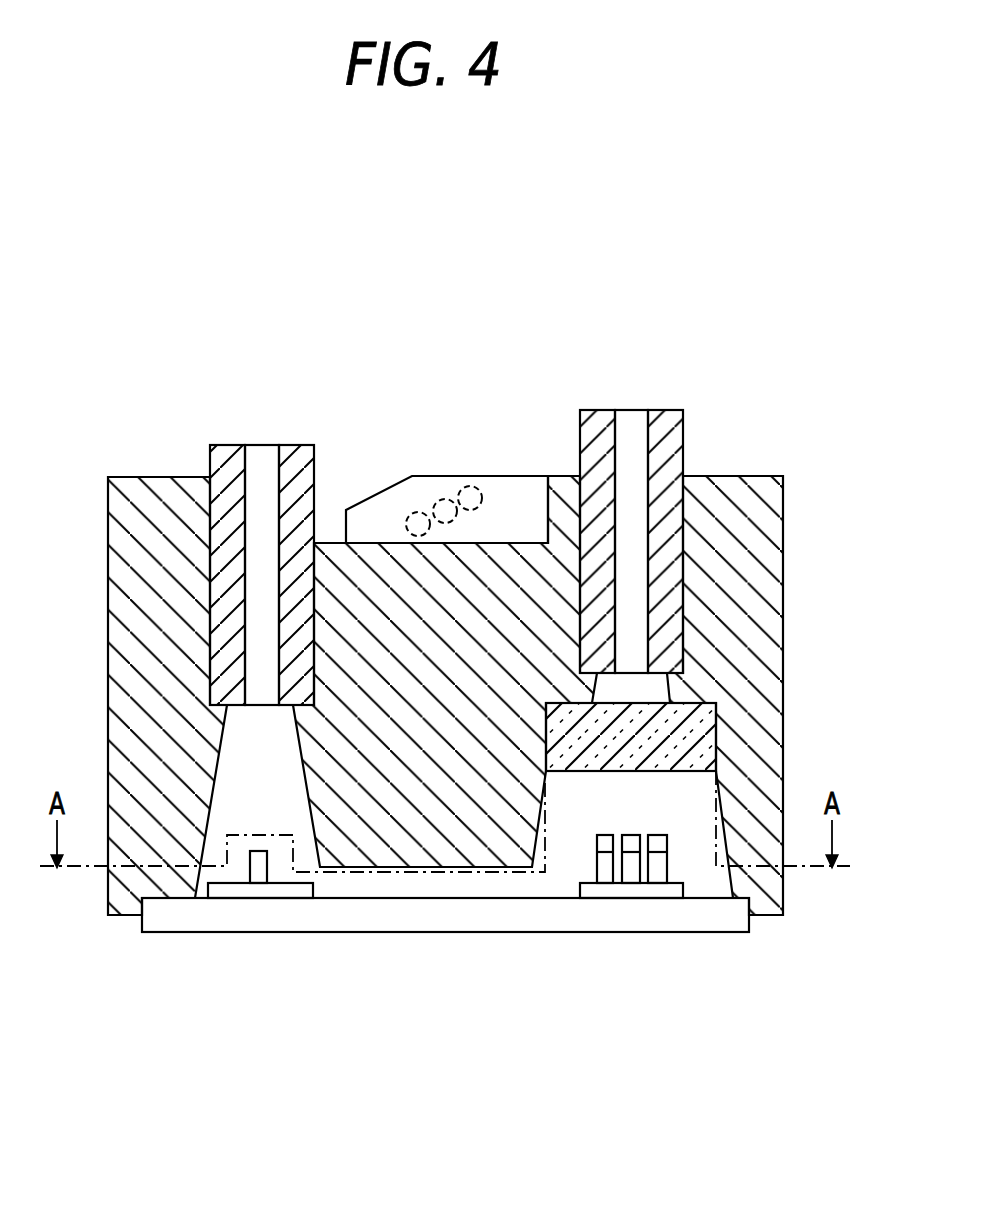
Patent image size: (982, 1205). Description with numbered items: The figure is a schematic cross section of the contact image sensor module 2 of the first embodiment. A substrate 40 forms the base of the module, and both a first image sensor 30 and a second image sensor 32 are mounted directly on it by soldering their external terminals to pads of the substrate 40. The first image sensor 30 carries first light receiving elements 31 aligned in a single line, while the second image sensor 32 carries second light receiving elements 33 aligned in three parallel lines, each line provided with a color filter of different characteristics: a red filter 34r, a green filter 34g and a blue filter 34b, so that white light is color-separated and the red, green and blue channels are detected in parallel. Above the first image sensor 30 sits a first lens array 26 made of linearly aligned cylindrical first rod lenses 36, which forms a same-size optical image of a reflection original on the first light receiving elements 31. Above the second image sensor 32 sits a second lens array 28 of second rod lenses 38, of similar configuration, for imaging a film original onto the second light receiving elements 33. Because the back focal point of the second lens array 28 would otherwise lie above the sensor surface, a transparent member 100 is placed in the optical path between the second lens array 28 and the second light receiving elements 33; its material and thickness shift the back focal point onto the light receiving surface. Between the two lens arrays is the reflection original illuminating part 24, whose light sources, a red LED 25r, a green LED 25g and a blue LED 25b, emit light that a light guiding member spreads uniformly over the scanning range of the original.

The contact image sensor module 2 is at (831, 469).
The reflection original illuminating part 24 is at (523, 492).
The red LED 25r is at (406, 512).
The green LED 25g is at (439, 498).
The blue LED 25b is at (473, 482).
The first lens array 26 is at (224, 459).
The first rod lenses 36 is at (258, 460).
The second lens array 28 is at (670, 440).
The second rod lenses 38 is at (628, 427).
The first image sensor 30 is at (217, 890).
The first light receiving elements 31 is at (258, 864).
The second image sensor 32 is at (583, 893).
The second light receiving elements 33 is at (628, 870).
The red filter 34r is at (597, 843).
The green filter 34g is at (631, 835).
The blue filter 34b is at (667, 843).
The substrate 40 is at (432, 920).
The transparent member 100 is at (712, 735).